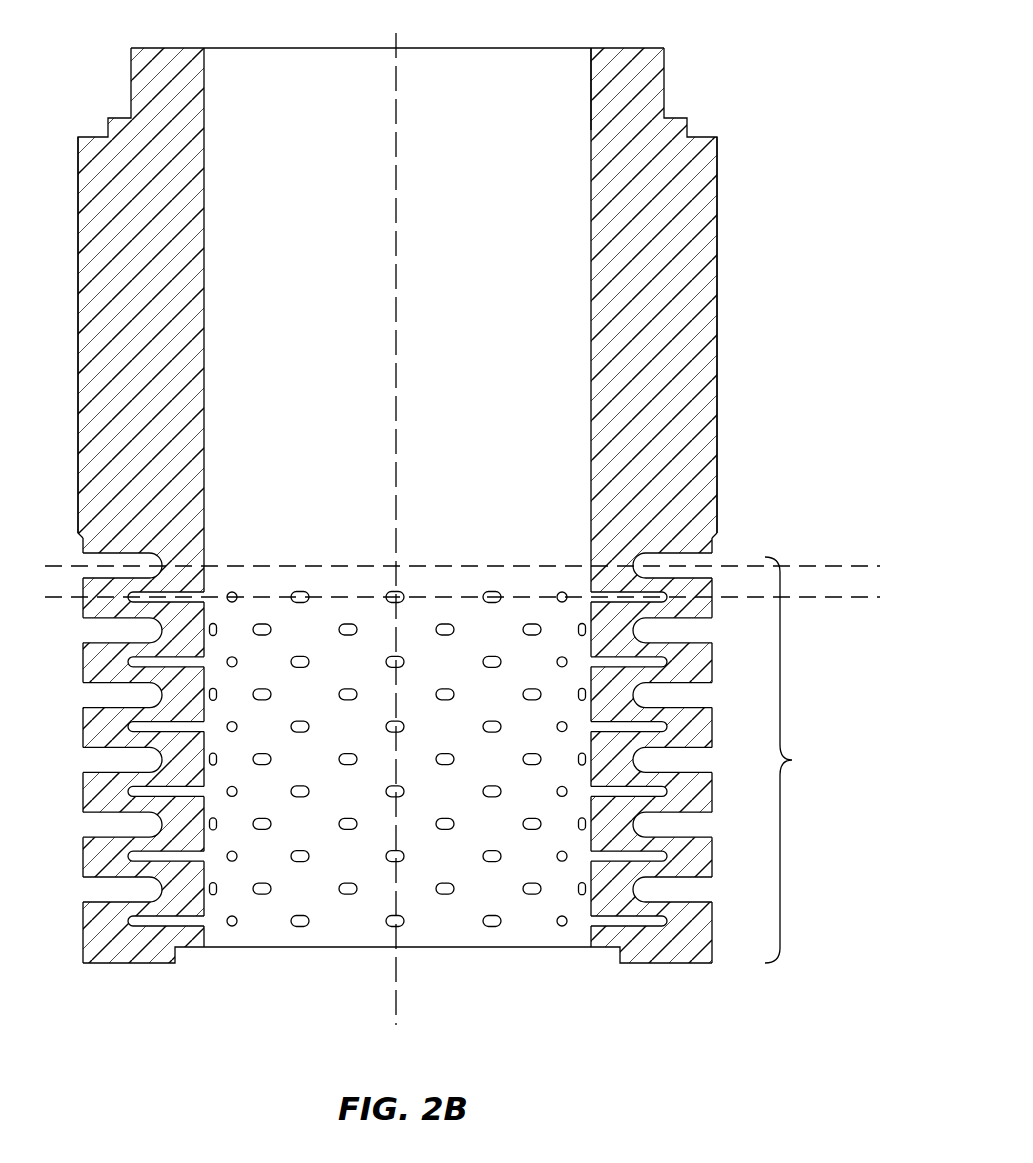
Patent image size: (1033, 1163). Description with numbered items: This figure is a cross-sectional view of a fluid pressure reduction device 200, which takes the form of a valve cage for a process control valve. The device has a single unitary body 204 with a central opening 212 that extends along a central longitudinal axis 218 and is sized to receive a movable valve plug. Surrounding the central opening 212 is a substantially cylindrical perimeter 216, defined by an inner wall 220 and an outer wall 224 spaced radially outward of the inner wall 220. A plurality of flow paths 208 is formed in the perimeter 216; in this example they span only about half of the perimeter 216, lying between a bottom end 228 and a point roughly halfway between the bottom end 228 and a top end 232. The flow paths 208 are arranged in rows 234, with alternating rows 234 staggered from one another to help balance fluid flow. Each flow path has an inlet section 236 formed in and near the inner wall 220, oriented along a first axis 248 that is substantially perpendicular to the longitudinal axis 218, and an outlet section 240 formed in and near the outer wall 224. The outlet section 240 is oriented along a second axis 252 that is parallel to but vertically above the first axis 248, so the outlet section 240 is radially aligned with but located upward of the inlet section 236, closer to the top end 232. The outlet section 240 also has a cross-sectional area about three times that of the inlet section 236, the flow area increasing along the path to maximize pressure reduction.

The fluid pressure reduction device 200 is at (727, 47).
The unitary body 204 is at (462, 514).
The flow paths 208 is at (814, 760).
The central opening 212 is at (591, 100).
The substantially cylindrical perimeter 216 is at (664, 221).
The central longitudinal axis 218 is at (398, 992).
The inner wall 220 is at (596, 323).
The outer wall 224 is at (717, 392).
The bottom end 228 is at (665, 964).
The top end 232 is at (624, 48).
The rows 234 is at (810, 760).
The inlet section 236 is at (612, 590).
The outlet section 240 is at (641, 568).
The first axis 248 is at (842, 597).
The second axis 252 is at (842, 566).